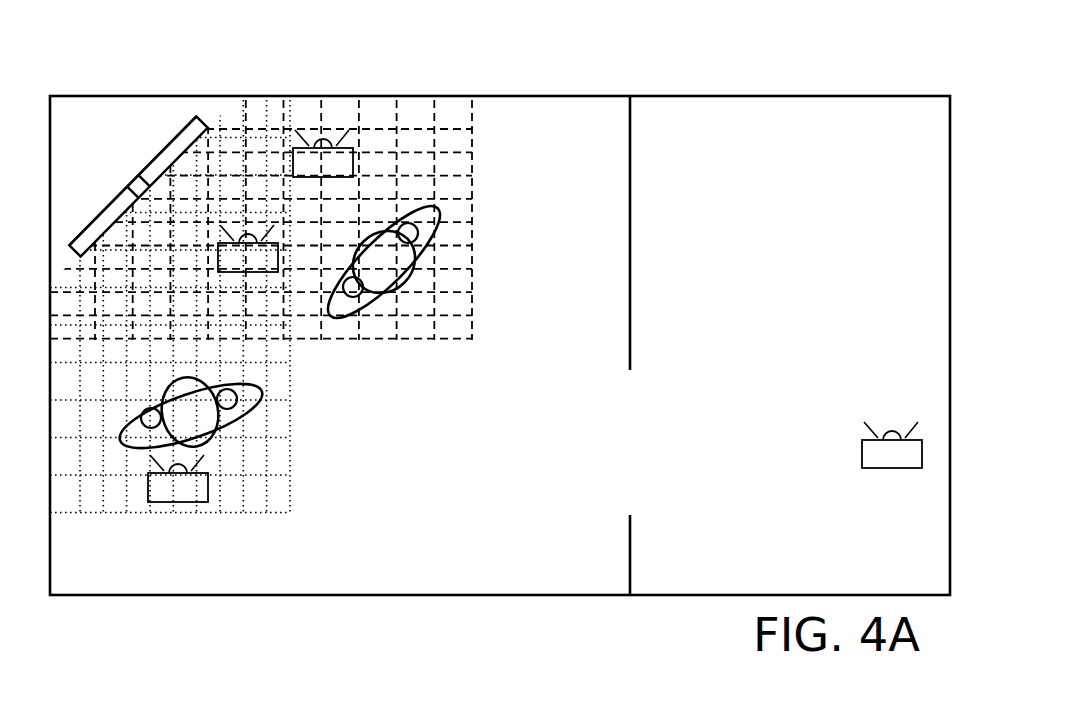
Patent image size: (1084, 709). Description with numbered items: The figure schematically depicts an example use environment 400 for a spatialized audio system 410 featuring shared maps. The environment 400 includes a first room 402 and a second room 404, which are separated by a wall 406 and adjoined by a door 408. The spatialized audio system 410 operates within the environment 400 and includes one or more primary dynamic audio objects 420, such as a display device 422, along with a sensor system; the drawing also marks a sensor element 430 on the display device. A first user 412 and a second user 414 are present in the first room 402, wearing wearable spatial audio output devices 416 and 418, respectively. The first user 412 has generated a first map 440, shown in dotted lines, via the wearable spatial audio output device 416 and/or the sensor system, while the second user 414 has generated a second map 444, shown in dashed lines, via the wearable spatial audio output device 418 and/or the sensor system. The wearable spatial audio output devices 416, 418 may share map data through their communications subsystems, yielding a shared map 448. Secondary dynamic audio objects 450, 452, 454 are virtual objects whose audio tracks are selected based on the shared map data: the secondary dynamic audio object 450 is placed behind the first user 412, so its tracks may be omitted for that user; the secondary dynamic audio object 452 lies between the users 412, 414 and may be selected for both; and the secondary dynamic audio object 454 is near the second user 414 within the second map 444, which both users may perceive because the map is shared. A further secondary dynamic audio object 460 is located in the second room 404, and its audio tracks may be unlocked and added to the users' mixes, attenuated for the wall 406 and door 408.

The use environment 400 is at (642, 45).
The first room 402 is at (620, 128).
The second room 404 is at (939, 126).
The wall 406 is at (630, 196).
The door 408 is at (640, 394).
The spatialized audio system 410 is at (113, 120).
The first user 412 is at (236, 426).
The second user 414 is at (432, 250).
The wearable spatial audio output device 416 is at (151, 403).
The wearable spatial audio output device 418 is at (405, 229).
The primary dynamic audio object 420 is at (108, 192).
The display device 422 is at (168, 148).
The sensor element 430 is at (137, 187).
The first map 440 is at (154, 515).
The second map 444 is at (381, 342).
The shared map 448 is at (353, 432).
The secondary dynamic audio object 450 is at (194, 499).
The secondary dynamic audio object 452 is at (264, 269).
The secondary dynamic audio object 454 is at (339, 174).
The secondary dynamic audio object 460 is at (908, 466).